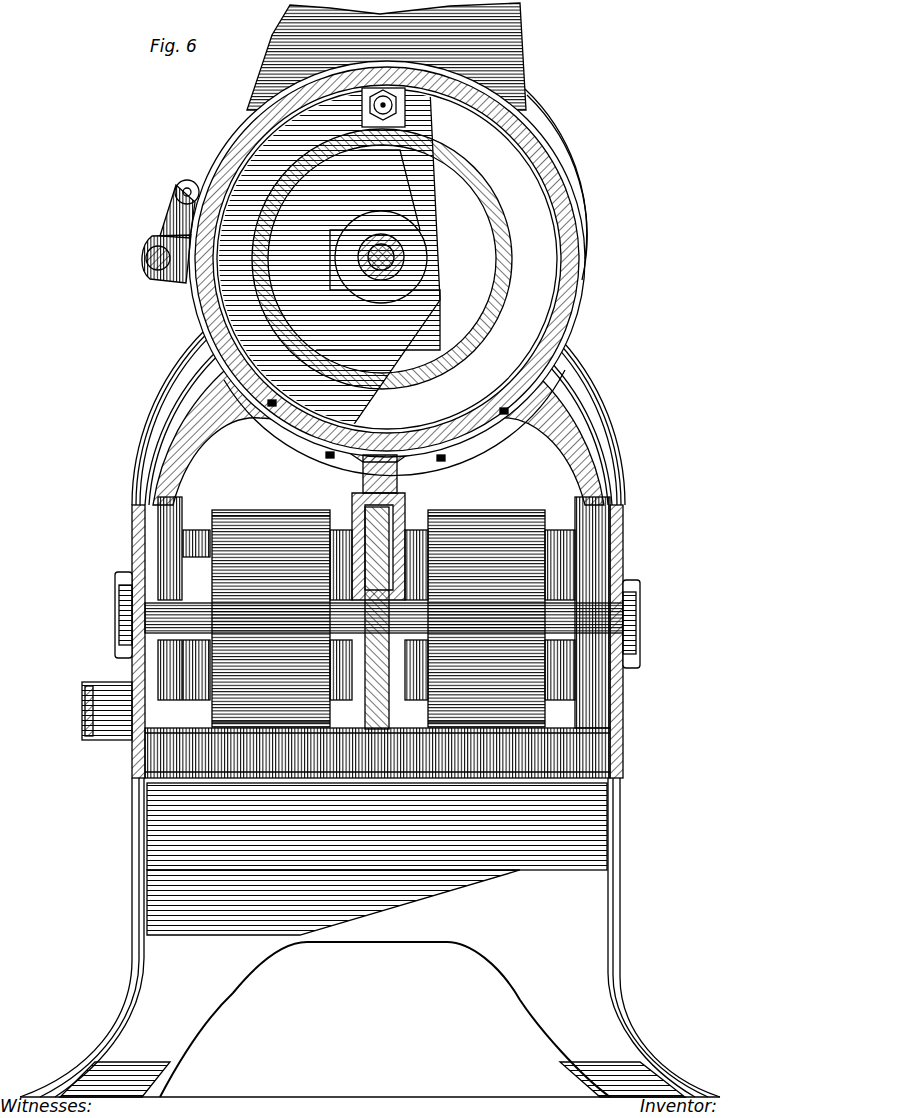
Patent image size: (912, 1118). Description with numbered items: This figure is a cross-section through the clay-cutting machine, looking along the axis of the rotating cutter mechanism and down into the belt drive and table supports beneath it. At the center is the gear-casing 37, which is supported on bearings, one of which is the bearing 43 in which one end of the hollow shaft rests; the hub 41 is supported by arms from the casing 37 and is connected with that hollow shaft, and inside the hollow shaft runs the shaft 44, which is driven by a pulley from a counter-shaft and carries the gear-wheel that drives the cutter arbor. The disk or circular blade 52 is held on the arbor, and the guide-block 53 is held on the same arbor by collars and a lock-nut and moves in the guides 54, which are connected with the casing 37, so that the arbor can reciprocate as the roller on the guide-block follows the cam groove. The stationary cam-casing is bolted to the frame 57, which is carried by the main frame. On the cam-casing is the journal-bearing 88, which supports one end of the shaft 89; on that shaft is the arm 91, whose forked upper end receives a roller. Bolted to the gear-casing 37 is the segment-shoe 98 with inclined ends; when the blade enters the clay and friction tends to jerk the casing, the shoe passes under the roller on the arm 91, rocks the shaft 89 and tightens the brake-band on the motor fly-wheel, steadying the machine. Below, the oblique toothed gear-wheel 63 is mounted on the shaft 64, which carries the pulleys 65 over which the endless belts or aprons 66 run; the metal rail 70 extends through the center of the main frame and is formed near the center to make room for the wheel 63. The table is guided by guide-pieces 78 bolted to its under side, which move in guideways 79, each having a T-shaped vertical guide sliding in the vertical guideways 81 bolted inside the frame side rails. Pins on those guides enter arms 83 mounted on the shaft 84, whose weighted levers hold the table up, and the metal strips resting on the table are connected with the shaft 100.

The disk or circular blade 52 is at (515, 58).
The guide-block 53 is at (402, 128).
The guides 54 is at (403, 107).
The bearing 43 is at (406, 257).
The shaft 44 is at (398, 268).
The hub 41 is at (375, 296).
The casing 37 is at (293, 338).
The segment-shoe 98 is at (585, 345).
The arm 91 is at (168, 224).
The shaft 89 is at (146, 262).
The journal-bearing 88 is at (170, 281).
The frame 57 is at (363, 470).
The shaft 100 is at (200, 510).
The vertical guideways 81 is at (172, 560).
The guide-pieces 78 is at (212, 538).
The guideways 79 is at (205, 556).
The pulleys 65 is at (378, 618).
The endless belts or aprons 66 is at (317, 512).
The shaft 64 is at (343, 616).
The oblique toothed gear-wheel 63 is at (415, 594).
The metal rail 70 is at (480, 594).
The arm 83 is at (196, 676).
The shaft 84 is at (204, 777).